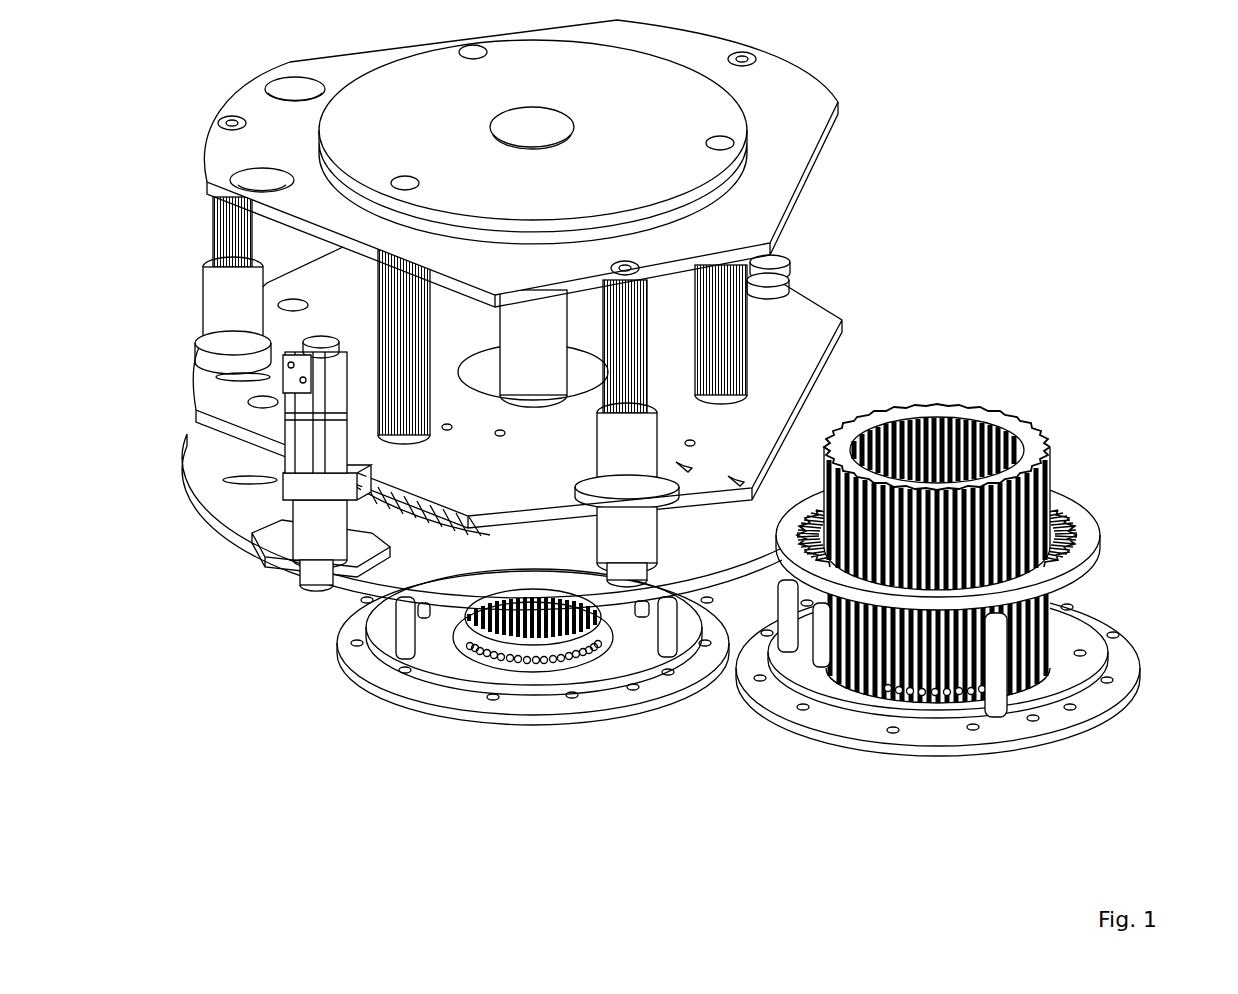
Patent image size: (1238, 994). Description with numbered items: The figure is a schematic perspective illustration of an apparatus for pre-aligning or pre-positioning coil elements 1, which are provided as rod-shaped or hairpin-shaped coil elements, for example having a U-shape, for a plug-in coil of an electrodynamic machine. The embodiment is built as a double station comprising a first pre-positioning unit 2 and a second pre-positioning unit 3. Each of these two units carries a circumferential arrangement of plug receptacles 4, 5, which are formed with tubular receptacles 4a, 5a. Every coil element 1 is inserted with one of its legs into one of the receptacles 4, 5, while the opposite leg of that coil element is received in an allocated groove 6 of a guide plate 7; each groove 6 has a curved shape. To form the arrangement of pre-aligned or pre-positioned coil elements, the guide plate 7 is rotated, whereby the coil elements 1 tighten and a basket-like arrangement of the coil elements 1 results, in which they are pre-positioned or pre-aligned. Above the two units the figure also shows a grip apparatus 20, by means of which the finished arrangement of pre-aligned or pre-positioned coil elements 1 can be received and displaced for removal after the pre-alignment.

The coil elements 1 is at (943, 404).
The first pre-positioning unit 2 is at (380, 657).
The second pre-positioning unit 3 is at (943, 748).
The plug receptacles 4 is at (520, 662).
The tubular receptacles 4a is at (554, 665).
The plug receptacles 5 is at (1012, 700).
The tubular receptacles 5a is at (877, 706).
The groove 6 is at (1100, 552).
The guide plate 7 is at (1084, 527).
The grip apparatus 20 is at (820, 320).